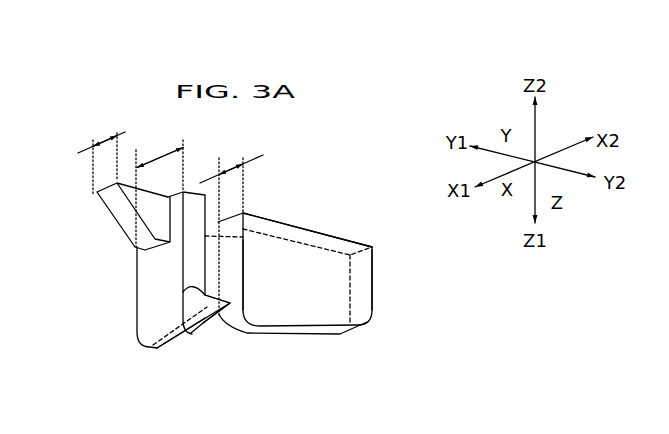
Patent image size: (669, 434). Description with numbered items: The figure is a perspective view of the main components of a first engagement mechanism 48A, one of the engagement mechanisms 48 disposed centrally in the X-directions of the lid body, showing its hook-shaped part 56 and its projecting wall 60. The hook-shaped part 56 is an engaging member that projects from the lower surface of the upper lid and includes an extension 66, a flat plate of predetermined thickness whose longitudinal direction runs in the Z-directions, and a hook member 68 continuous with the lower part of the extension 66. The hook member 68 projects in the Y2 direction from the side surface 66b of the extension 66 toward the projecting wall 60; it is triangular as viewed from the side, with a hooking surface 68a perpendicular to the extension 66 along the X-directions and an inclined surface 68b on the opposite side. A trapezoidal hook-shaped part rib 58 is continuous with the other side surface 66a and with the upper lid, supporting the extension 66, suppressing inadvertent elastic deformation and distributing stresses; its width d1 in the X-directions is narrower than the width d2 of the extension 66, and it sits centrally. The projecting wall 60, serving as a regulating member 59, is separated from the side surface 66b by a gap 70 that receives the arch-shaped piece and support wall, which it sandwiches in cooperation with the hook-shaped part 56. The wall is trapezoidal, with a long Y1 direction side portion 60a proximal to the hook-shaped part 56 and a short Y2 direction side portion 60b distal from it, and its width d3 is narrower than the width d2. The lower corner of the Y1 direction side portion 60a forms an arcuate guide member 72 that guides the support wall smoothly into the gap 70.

The first engagement mechanism 48A is at (329, 137).
The engagement mechanism 48 is at (250, 300).
The hook-shaped part 56 is at (115, 308).
The hook-shaped part rib 58 is at (123, 207).
The extension 66 is at (137, 262).
The side surface in the Y1 direction 66a is at (155, 290).
The side surface in the Y2 direction 66b is at (205, 257).
The hook member 68 is at (197, 340).
The hooking surface 68a is at (153, 352).
The inclined surface 68b is at (216, 328).
The projecting wall 60 is at (315, 323).
The regulating member 59 is at (307, 269).
The Y1 direction side portion 60a is at (233, 273).
The Y2 direction side portion 60b is at (378, 279).
The gap 70 is at (243, 232).
The guide member 72 is at (250, 333).
The width of the hook-shaped part rib d1 is at (103, 129).
The width of the extension d2 is at (160, 150).
The width of the projecting wall d3 is at (228, 160).